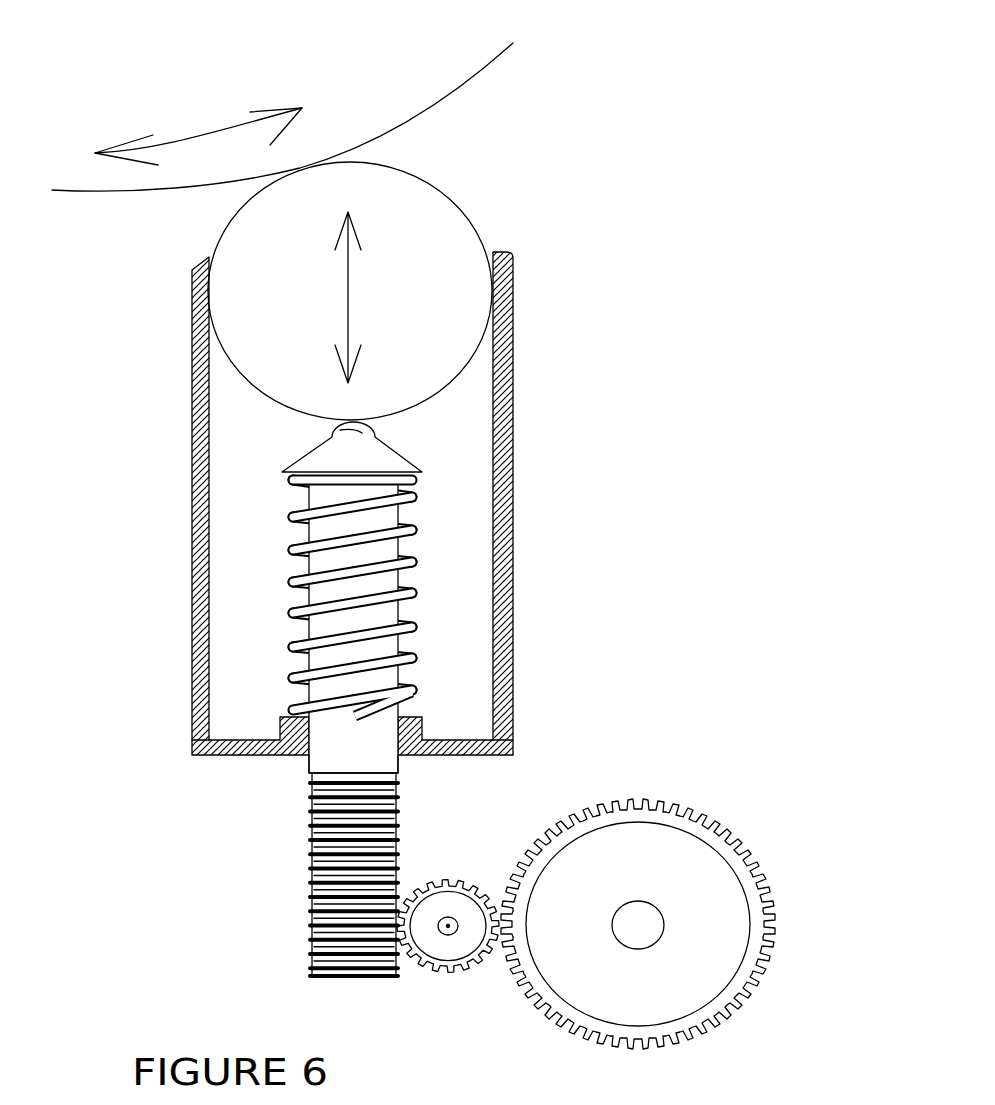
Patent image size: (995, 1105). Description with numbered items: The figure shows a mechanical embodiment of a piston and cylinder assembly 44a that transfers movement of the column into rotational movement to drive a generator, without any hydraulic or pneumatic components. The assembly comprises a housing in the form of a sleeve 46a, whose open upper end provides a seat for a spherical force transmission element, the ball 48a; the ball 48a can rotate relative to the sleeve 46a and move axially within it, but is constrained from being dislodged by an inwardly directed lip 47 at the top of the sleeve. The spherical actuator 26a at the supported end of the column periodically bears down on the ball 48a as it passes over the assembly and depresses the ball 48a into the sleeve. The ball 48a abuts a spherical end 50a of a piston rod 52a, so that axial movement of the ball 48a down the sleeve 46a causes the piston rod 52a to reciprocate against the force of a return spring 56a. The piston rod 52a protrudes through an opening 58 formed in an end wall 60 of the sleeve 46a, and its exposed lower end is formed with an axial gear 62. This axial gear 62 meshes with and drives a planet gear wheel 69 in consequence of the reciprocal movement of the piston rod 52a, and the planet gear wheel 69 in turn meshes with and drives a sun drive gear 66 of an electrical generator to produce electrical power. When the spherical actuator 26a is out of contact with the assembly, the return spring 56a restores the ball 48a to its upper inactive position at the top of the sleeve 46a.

The spherical actuator 26a is at (386, 117).
The piston and cylinder assembly 44a is at (127, 348).
The sleeve 46a is at (348, 512).
The inwardly directed lip 47 is at (493, 252).
The ball 48a is at (420, 301).
The spherical end 50a is at (360, 430).
The piston rod 52a is at (435, 607).
The return spring 56a is at (400, 563).
The opening 58 is at (398, 757).
The end wall 60 is at (247, 748).
The axial gear 62 is at (312, 925).
The sun drive gear 66 is at (653, 994).
The planet gear wheel 69 is at (463, 972).